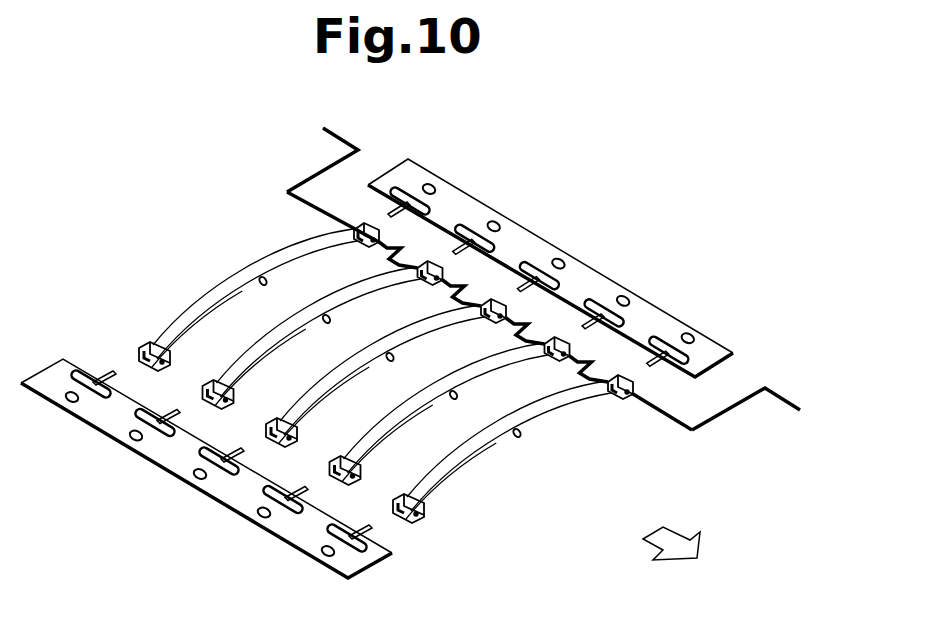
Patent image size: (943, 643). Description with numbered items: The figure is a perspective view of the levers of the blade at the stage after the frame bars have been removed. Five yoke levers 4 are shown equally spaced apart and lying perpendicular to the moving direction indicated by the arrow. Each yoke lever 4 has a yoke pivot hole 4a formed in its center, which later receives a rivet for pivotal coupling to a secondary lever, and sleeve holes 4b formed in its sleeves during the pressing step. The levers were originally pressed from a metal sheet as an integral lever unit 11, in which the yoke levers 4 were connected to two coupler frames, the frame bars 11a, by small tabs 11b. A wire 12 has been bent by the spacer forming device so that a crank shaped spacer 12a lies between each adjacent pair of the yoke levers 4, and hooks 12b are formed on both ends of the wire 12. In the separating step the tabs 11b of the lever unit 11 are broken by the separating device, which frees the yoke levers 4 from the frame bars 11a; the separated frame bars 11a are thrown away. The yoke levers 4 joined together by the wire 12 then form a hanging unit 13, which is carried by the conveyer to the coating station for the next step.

The yoke lever 4 is at (404, 369).
The yoke pivot hole 4a is at (270, 272).
The sleeve hole 4b is at (372, 248).
The lever unit 11 is at (377, 352).
The frame bar 11a is at (547, 243).
The tab 11b is at (388, 209).
The wire 12 is at (545, 292).
The crank shaped spacer 12a is at (462, 285).
The hook 12b is at (340, 130).
The hanging unit 13 is at (722, 468).